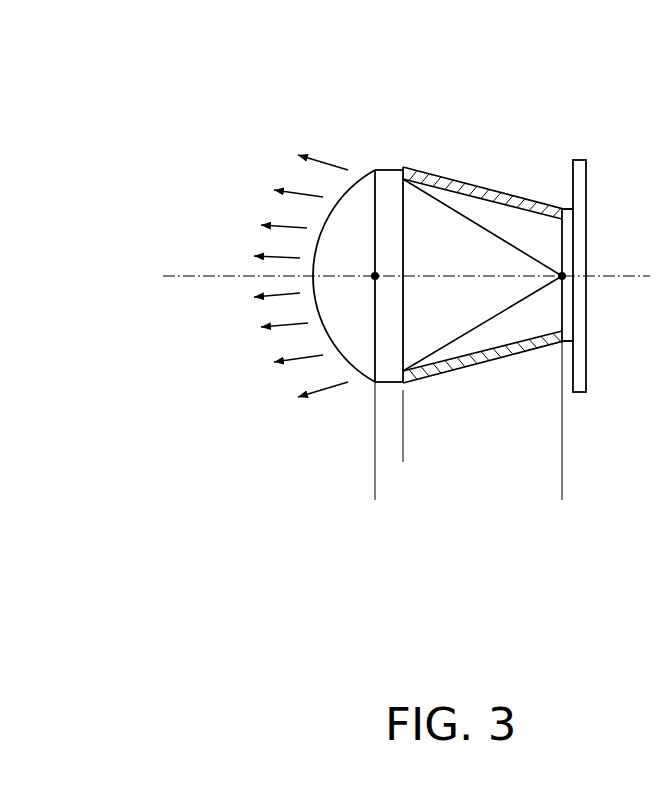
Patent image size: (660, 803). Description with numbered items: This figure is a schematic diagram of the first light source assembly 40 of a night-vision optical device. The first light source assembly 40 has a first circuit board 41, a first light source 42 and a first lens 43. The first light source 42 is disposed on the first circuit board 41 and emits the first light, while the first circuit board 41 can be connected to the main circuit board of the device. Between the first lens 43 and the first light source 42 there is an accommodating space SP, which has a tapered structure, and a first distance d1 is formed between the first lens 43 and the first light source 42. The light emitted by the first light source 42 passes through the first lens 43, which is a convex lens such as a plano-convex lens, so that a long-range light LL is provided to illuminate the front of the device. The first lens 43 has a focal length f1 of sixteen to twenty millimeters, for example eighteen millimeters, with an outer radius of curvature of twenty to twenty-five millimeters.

The first light source assembly 40 is at (180, 56).
The first circuit board 41 is at (583, 181).
The first light source 42 is at (567, 210).
The first lens 43 is at (366, 180).
The accommodating space SP is at (465, 207).
The long-range light LL is at (306, 146).
The first distance d1 is at (561, 453).
The focal length f1 is at (561, 490).